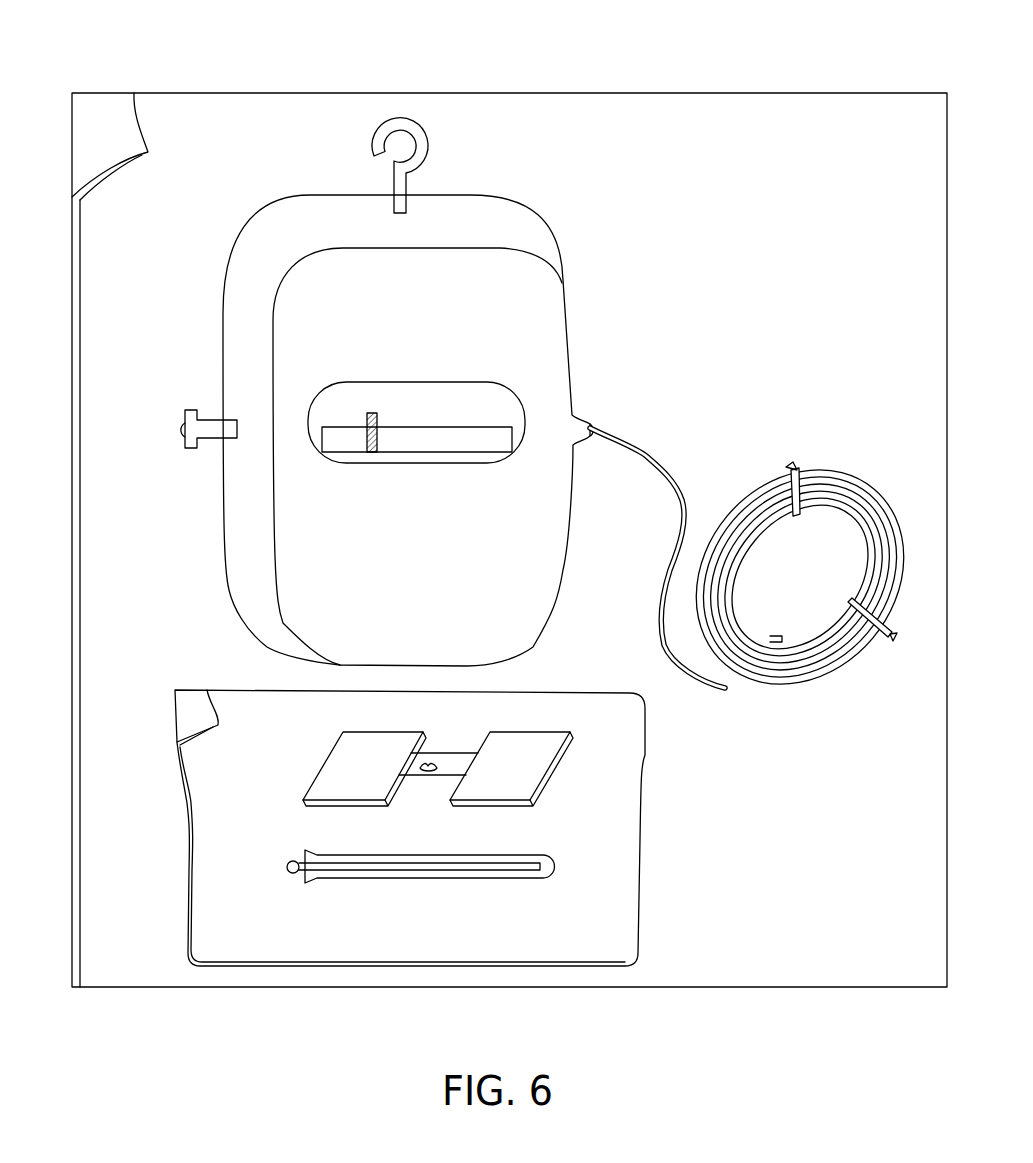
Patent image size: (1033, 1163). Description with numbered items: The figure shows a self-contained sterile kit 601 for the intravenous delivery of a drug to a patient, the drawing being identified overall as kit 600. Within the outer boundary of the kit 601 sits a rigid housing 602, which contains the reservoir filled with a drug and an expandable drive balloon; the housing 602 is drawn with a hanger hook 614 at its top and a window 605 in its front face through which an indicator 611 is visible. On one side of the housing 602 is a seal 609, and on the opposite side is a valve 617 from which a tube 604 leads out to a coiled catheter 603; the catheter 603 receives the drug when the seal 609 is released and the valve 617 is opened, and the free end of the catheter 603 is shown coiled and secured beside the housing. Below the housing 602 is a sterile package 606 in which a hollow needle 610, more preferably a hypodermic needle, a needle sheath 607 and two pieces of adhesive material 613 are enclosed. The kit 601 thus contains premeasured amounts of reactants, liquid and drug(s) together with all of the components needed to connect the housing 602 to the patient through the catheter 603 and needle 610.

The kit 600 is at (113, 58).
The self-contained sterile kit 601 is at (822, 978).
The rigid housing 602 is at (532, 342).
The catheter 603 is at (835, 473).
The tube 604 is at (642, 452).
The window / tube end 605 is at (400, 388).
The sterile package 606 is at (632, 765).
The needle sheath 607 is at (558, 867).
The seal 609 is at (187, 445).
The hollow needle 610 is at (517, 870).
The indicator / applicator tip 611 is at (442, 443).
The adhesive material 613 is at (323, 778).
The hanger hook 614 is at (430, 147).
The valve 617 is at (592, 424).